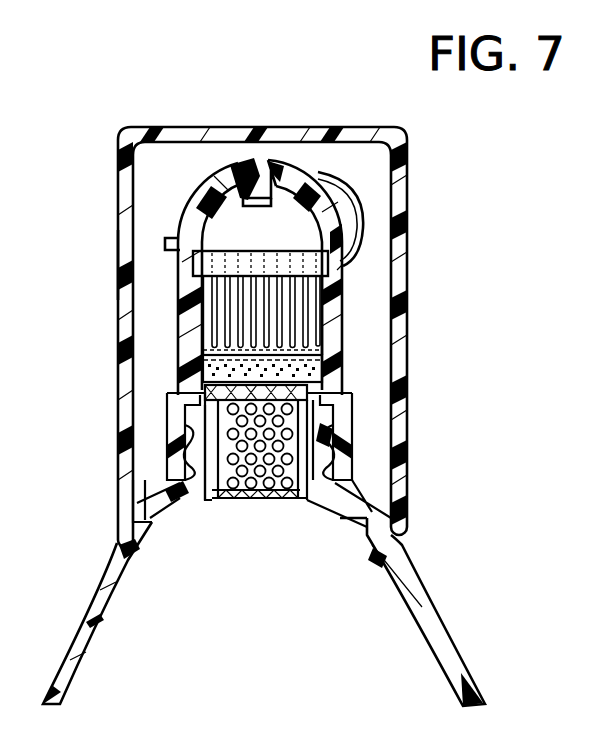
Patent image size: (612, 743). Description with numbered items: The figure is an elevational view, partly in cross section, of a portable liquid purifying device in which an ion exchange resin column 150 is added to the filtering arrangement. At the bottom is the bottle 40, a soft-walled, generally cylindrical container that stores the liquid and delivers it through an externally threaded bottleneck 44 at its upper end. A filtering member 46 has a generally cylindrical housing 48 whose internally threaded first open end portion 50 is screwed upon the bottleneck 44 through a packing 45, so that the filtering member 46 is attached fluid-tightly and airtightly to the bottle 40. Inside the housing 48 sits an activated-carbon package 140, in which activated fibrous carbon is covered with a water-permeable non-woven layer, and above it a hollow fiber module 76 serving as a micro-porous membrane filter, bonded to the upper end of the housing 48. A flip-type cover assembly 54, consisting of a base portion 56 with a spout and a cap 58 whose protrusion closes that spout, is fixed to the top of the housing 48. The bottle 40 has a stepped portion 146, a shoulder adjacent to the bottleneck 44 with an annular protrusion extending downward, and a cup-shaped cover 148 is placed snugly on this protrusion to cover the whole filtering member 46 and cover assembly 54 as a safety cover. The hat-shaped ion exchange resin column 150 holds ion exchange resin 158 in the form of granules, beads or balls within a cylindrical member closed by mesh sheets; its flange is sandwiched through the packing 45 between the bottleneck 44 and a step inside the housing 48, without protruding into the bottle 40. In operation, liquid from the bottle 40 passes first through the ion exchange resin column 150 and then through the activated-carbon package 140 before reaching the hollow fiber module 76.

The bottle 40 is at (458, 628).
The bottleneck 44 is at (337, 450).
The packing 45 is at (315, 425).
The filtering member 46 is at (367, 333).
The housing 48 is at (352, 308).
The first open end portion 50 is at (175, 442).
The flip-type cover assembly 54 is at (293, 162).
The base portion 56 is at (212, 202).
The cap 58 is at (233, 170).
The hollow fiber module 76 is at (223, 325).
The activated-carbon package 140 is at (322, 368).
The stepped portion 146 is at (132, 524).
The cup-shaped cover 148 is at (124, 256).
The ion exchange resin column 150 is at (252, 503).
The ion exchange resin 158 is at (278, 498).